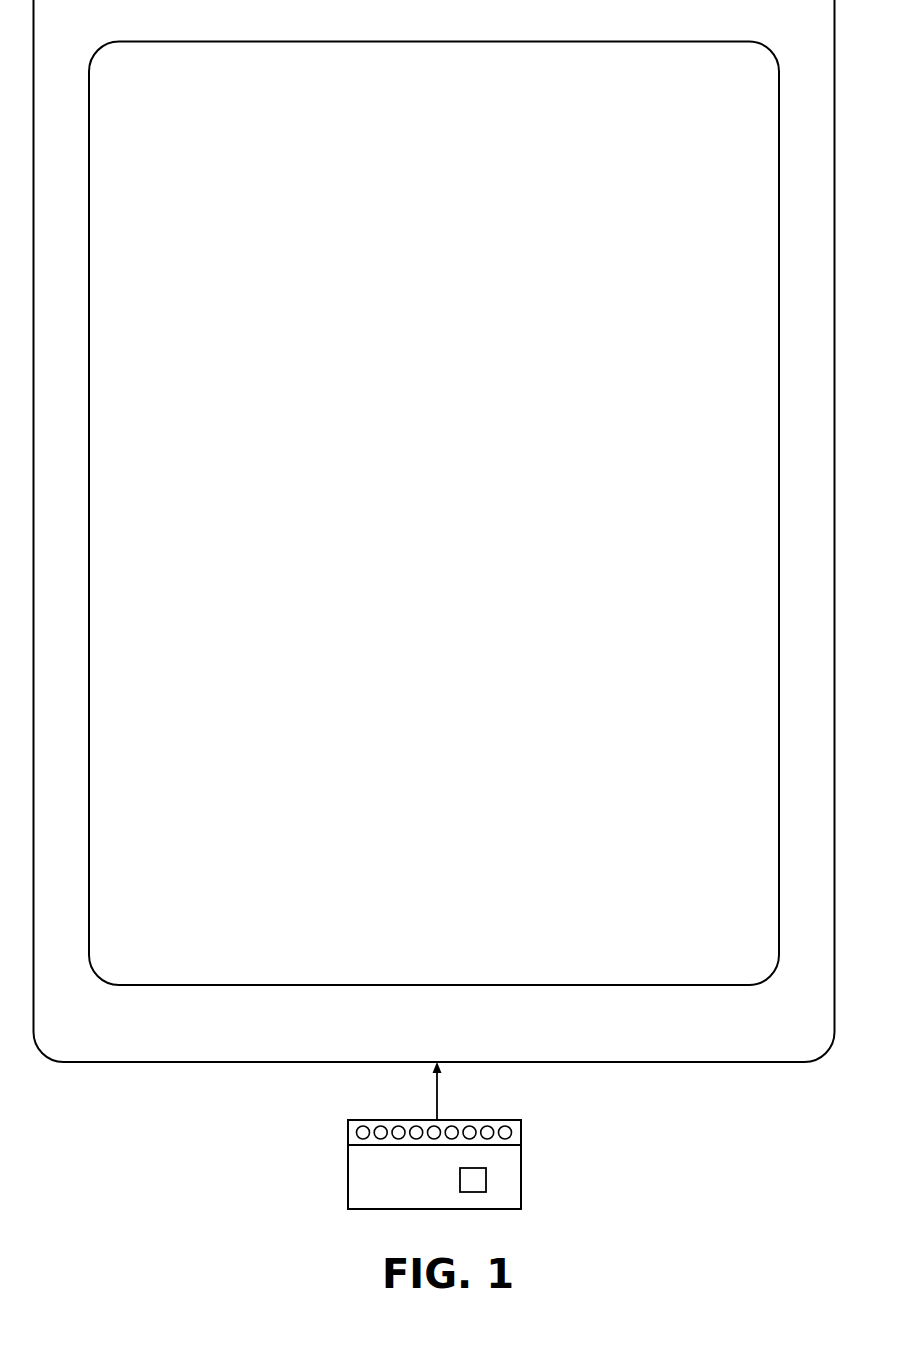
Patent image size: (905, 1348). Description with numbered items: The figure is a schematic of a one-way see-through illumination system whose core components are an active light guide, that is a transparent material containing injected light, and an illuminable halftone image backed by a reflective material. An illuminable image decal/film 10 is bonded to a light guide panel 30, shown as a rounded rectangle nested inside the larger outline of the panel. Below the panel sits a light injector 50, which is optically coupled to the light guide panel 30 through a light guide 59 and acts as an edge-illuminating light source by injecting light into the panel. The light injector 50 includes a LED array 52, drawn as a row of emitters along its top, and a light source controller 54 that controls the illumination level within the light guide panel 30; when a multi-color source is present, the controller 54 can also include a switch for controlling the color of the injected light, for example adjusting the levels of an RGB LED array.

The illuminable image decal/film 10 is at (715, 752).
The light guide panel 30 is at (715, 1036).
The light injector 50 is at (412, 1192).
The LED array 52 is at (494, 1128).
The light source controller 54 is at (477, 1180).
The light guide 59 is at (437, 1090).